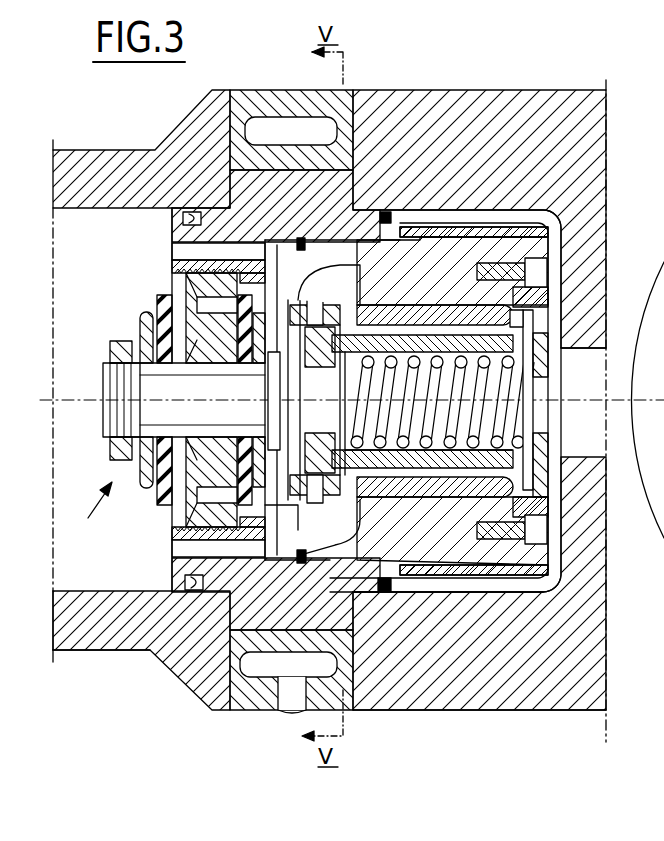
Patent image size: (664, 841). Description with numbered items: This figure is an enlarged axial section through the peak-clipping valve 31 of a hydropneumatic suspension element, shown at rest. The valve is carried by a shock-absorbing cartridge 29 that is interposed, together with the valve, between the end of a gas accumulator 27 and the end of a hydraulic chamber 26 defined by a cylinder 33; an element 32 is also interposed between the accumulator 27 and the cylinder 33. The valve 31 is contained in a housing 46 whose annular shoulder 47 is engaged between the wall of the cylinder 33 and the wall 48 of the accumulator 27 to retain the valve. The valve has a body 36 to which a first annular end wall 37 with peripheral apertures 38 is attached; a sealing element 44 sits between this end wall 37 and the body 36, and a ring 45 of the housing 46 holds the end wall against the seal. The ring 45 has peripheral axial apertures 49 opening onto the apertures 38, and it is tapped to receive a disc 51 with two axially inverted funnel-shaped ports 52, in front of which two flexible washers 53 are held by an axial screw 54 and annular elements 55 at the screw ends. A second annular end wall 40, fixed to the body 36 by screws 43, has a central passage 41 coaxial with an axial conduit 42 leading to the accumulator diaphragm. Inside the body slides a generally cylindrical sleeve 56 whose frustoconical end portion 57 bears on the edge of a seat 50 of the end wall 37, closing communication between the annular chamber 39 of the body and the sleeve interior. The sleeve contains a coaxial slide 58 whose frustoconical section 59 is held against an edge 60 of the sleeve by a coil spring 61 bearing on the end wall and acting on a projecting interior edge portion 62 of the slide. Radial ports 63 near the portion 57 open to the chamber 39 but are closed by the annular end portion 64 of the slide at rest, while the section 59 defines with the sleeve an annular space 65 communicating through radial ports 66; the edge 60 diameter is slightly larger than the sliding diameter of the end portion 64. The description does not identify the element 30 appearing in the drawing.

The hydraulic chamber 26 is at (96, 586).
The gas accumulator 27 is at (536, 713).
The shock-absorbing cartridge 29 is at (89, 510).
The housing 30 is at (110, 445).
The peak-clipping valve 31 is at (442, 545).
The element 32 is at (250, 95).
The cylinder 33 is at (75, 648).
The body 36 is at (450, 248).
The first annular end wall 37 is at (298, 522).
The peripheral apertures 38 is at (300, 238).
The annular chamber 39 is at (322, 238).
The second annular end wall 40 is at (543, 270).
The central passage 41 is at (540, 378).
The axial conduit 42 is at (617, 411).
The screws 43 is at (590, 240).
The sealing element 44 is at (300, 562).
The ring 45 is at (175, 568).
The housing 46 is at (198, 652).
The annular shoulder 47 is at (318, 168).
The wall 48 is at (485, 100).
The axial apertures 49 is at (172, 252).
The seat 50 is at (280, 250).
The disc 51 is at (160, 340).
The funnel-shaped ports 52 is at (175, 288).
The flexible washers 53 is at (110, 350).
The axial screw 54 is at (352, 400).
The annular elements 55 is at (148, 312).
The sleeve 56 is at (430, 305).
The frustoconical end portion 57 is at (350, 270).
The slide 58 is at (435, 494).
The frustoconical section 59 is at (520, 315).
The edge 60 is at (510, 485).
The coil spring 61 is at (517, 440).
The projecting interior edge portion 62 is at (290, 400).
The radial ports 63 is at (358, 292).
The annular end portion 64 is at (322, 456).
The annular space 65 is at (550, 530).
The radial ports 66 is at (360, 500).